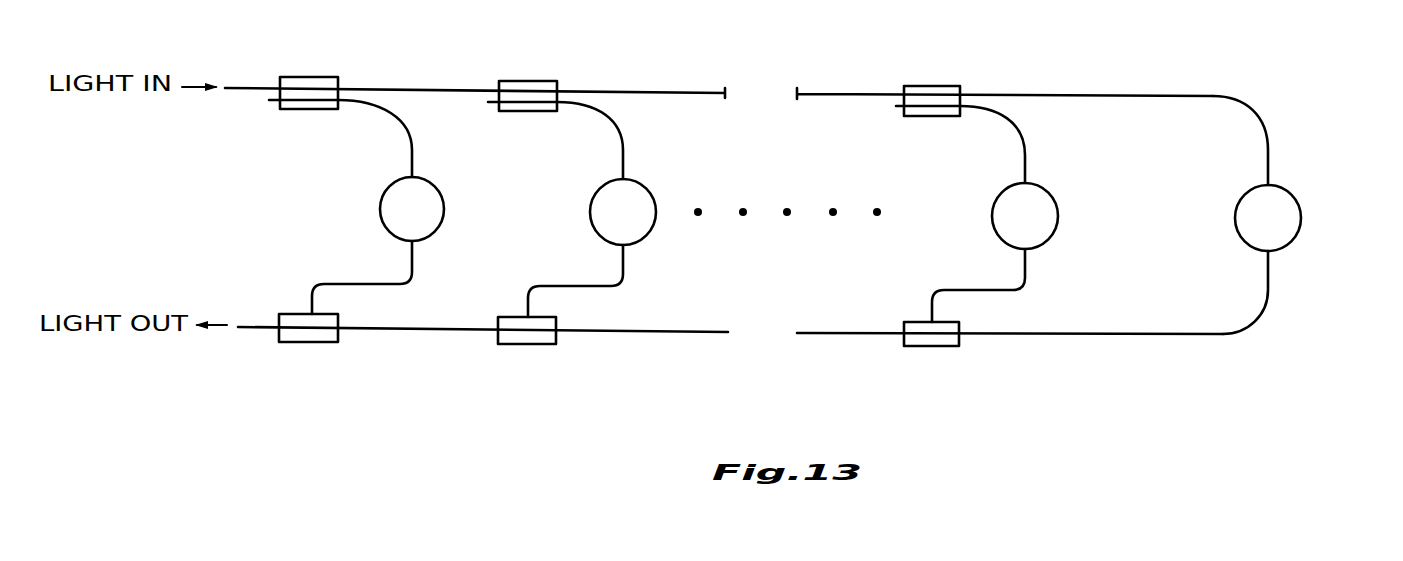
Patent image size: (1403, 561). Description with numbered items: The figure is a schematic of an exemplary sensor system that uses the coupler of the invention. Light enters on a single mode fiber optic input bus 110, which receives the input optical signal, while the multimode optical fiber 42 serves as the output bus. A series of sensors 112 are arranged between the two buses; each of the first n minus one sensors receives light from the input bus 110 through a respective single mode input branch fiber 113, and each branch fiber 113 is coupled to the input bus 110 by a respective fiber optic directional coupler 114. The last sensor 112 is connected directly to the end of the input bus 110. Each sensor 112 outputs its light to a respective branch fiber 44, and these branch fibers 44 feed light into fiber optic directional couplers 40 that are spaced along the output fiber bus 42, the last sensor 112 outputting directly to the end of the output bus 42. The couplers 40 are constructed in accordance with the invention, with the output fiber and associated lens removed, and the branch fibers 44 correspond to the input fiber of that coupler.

The single mode fiber optic input bus 110 is at (670, 90).
The multimode optical fiber 42 is at (250, 327).
The fiber optic directional couplers 114 is at (672, 71).
The single mode input branch fibers 113 is at (730, 141).
The sensors 112 is at (830, 215).
The branch fibers 44 is at (745, 279).
The fiber optic directional couplers 40 is at (680, 355).